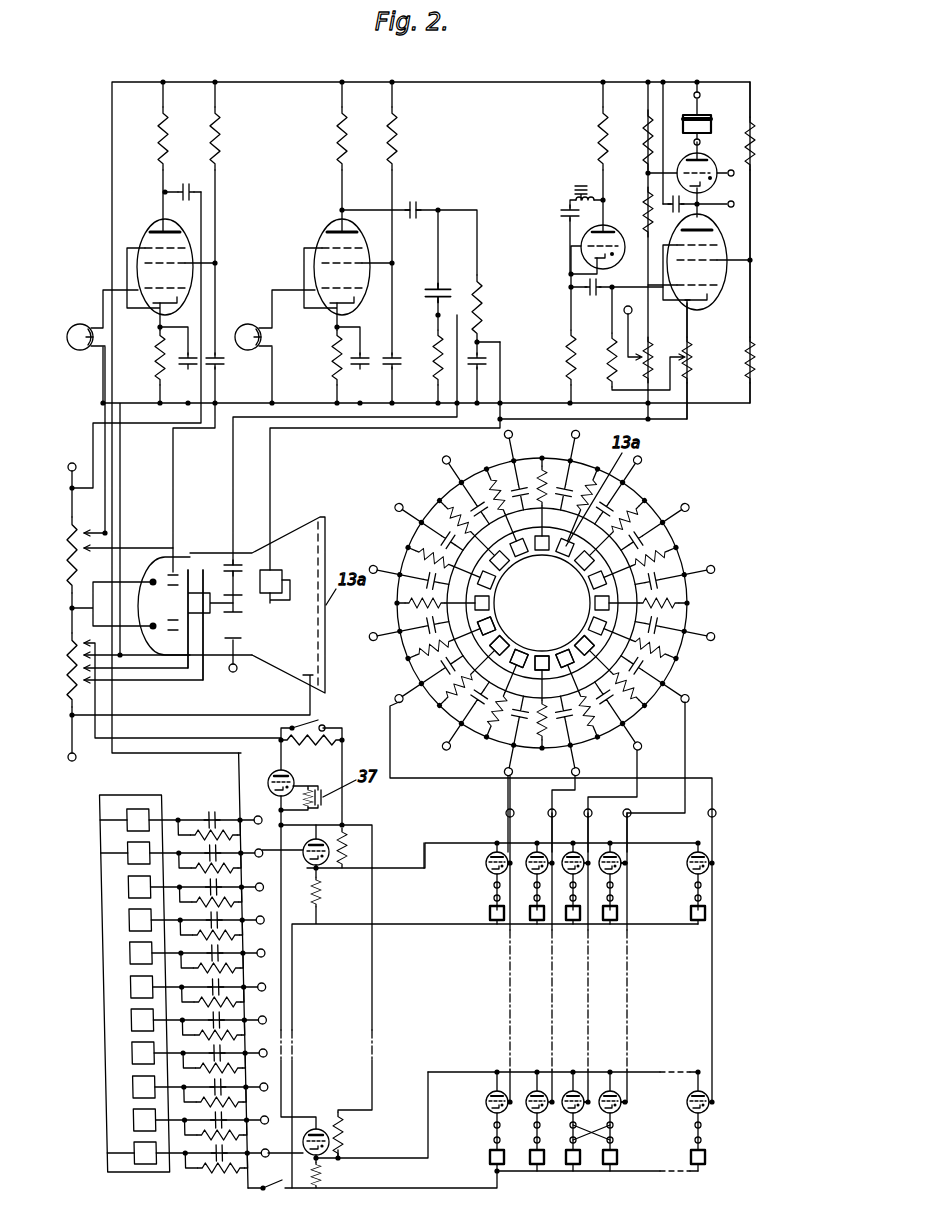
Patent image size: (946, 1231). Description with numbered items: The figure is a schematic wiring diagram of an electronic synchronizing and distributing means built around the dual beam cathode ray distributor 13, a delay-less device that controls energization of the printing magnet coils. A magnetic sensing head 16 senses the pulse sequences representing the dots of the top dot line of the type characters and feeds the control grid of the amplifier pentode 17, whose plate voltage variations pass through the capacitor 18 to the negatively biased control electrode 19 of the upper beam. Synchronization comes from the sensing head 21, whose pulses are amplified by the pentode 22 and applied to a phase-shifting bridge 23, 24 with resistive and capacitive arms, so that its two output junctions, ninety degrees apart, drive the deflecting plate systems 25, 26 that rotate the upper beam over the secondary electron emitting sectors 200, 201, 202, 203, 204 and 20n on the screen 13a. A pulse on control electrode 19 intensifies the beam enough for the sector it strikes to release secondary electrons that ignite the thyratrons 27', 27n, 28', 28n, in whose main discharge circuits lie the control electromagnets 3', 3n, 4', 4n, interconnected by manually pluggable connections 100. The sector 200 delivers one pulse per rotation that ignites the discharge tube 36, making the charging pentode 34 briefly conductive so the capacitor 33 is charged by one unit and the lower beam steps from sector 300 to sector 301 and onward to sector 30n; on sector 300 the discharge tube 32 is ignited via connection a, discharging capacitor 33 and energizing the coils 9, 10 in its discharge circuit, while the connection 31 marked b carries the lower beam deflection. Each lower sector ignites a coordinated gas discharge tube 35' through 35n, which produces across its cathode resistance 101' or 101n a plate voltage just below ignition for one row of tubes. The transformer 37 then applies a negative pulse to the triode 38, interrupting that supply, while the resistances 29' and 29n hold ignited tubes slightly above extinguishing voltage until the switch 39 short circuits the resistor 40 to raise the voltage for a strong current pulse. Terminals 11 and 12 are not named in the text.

The magnetic sensing head 16 is at (78, 324).
The amplifier pentode 17 is at (150, 230).
The capacitor 18 is at (184, 184).
The sensing head 21 is at (255, 324).
The pentode 22 is at (323, 230).
The bridge arm 23 is at (441, 288).
The bridge arm 24 is at (481, 275).
The transformer 37 is at (580, 185).
The discharge tube 36 is at (606, 232).
The coil of electromagnet 9 is at (690, 112).
The coil of electromagnet 10 is at (697, 124).
The terminal 11 is at (700, 95).
The tube 12 is at (700, 142).
The discharge tube 32 is at (712, 180).
The capacitor 33 is at (700, 205).
The charging pentode 34 is at (720, 285).
The control electrode 19 is at (165, 560).
The deflecting plate system 25 is at (231, 562).
The dual beam cathode ray distributor 13 is at (305, 528).
The deflecting plate system 26 is at (284, 582).
The screen 13a is at (100, 810).
The contact 31 is at (231, 650).
The switch 39 is at (315, 722).
The resistor 40 is at (312, 745).
The triode 38 is at (272, 775).
The gas discharge tube 35' is at (317, 868).
The resistance 29' is at (372, 831).
The cathode resistance 101' is at (495, 1032).
The gas discharge tube 35n is at (322, 1129).
The resistance 29n is at (348, 1140).
The cathode resistance 101n is at (325, 1185).
The sector 300 is at (100, 820).
The sector 301 is at (100, 853).
The sector 30n is at (100, 1153).
The sector 200 is at (450, 691).
The sector 201 is at (496, 708).
The sector 202 is at (546, 716).
The sector 203 is at (586, 710).
The sector 204 is at (624, 700).
The sector 20n is at (505, 614).
The thyratron 27' is at (487, 855).
The thyratron 27n is at (710, 853).
The control electromagnet 3' is at (487, 936).
The control electromagnet 3n is at (695, 925).
The thyratron 28' is at (481, 1109).
The thyratron 28n is at (712, 1100).
The manually pluggable connection 100 is at (605, 1130).
The control electromagnet 4' is at (482, 1160).
The control electromagnet 4n is at (706, 1160).